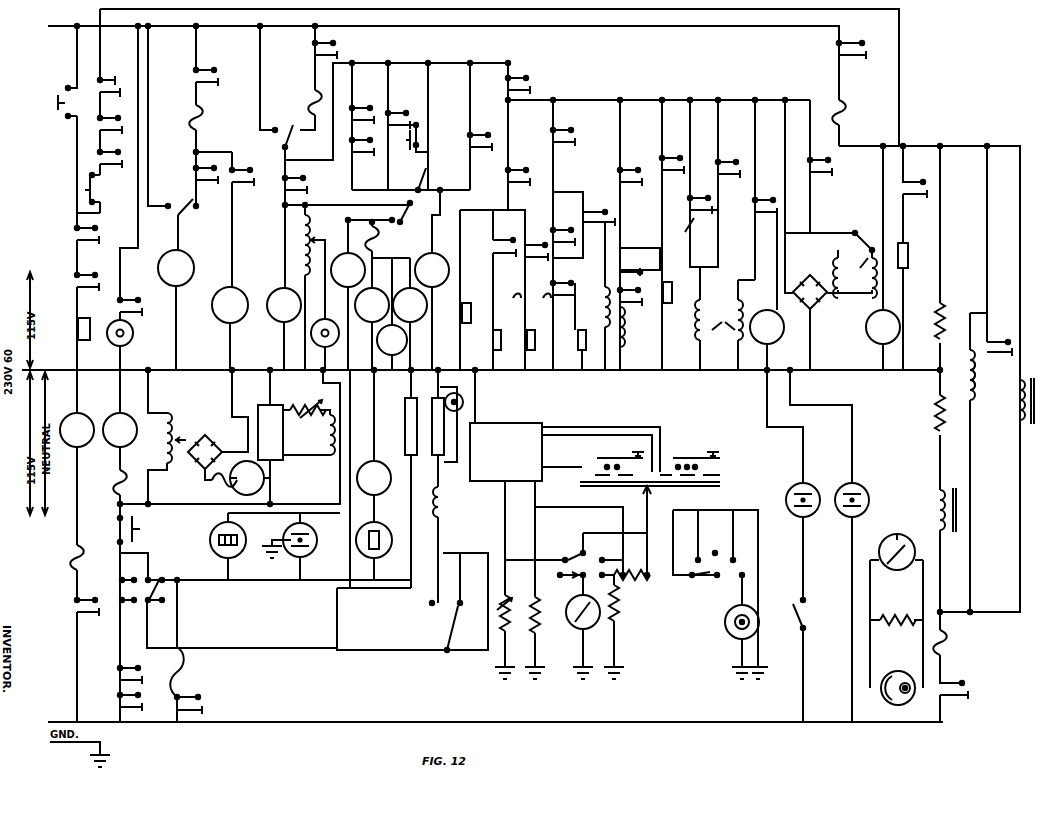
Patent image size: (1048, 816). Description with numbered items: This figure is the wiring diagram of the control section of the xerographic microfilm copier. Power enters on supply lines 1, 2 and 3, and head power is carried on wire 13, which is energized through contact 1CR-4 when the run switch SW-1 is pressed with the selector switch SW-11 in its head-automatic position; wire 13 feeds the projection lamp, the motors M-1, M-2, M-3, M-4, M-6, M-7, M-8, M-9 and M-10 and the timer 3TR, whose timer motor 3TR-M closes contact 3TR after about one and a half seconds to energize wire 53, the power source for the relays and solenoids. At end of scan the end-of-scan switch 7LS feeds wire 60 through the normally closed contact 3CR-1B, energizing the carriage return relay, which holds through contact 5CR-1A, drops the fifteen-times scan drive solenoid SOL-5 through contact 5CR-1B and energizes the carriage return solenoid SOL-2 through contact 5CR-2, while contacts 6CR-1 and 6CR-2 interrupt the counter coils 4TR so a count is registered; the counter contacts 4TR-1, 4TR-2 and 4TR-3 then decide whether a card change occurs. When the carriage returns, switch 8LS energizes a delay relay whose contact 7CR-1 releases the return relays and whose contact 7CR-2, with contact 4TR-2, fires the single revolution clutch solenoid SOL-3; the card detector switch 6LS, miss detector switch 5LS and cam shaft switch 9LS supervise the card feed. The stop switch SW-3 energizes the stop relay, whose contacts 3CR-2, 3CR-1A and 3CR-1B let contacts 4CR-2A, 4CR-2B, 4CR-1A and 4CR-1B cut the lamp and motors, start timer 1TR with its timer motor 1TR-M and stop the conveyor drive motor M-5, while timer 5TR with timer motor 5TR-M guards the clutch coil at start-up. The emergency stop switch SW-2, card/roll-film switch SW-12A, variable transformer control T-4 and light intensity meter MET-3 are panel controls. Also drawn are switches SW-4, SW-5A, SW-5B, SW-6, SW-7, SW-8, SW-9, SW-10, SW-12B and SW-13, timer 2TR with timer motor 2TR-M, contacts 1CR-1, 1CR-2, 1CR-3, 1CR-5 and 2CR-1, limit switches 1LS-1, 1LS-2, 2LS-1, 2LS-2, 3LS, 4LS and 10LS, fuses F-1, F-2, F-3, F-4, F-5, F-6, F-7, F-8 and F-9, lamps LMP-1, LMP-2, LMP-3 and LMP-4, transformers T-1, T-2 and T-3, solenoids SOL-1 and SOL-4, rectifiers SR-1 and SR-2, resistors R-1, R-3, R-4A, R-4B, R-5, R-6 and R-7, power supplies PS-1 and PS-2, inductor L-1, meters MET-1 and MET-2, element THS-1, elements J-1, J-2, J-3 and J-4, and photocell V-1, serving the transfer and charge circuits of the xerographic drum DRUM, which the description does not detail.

The line 1 (115V neutral bus) 1 is at (474, 371).
The line 2 (ground bus) 2 is at (488, 723).
The line 3 (115V bus) 3 is at (436, 31).
The wire 13 is at (396, 131).
The wire 53 is at (655, 104).
The wire 60 is at (535, 304).
The Run switch SW-1 is at (69, 118).
The Emergency Stop switch SW-2 is at (111, 193).
The Stop switch SW-3 is at (433, 125).
The switch SW-4 is at (265, 637).
The switch SW-5A is at (592, 559).
The switch SW-5B is at (716, 594).
The transfer switch POS./NEG. SW-6 is at (425, 602).
The switch SW-7 is at (180, 125).
The switch SW-8 is at (817, 660).
The switch SW-9 is at (114, 542).
The switch SW-10 is at (463, 402).
The Projection Only-Automatic switch SW-11 is at (279, 91).
The Card-Roll Film switch SW-12A is at (404, 220).
The card / roll film switch SW-12B is at (437, 175).
The 15X/20X switch SW-13 is at (846, 235).
The timer 1TR is at (112, 72).
The timer motor 1TR-M is at (230, 328).
The timer relay contact 2TR is at (914, 193).
The timer motor 2TR-M is at (883, 257).
The timer 3TR is at (537, 80).
The timer motor 3TR-M is at (362, 287).
The automatic reset-type counter 4TR is at (725, 318).
The counter contact 4TR-1 is at (734, 155).
The counter contact 4TR-2 is at (638, 310).
The counter contact 4TR-3 is at (599, 248).
The timer 5TR is at (691, 238).
The timer motor 5TR-M is at (767, 291).
The control relay contact 1CR-1 is at (991, 689).
The control relay contact 1CR-2 is at (94, 660).
The control relay contact 1CR-3 is at (210, 708).
The relay contact 1CR-4 is at (350, 49).
The control relay contact 1CR-5 is at (218, 64).
The control relay contact 2CR-1 is at (1001, 359).
The relay contact 3CR-1A is at (492, 270).
The relay contact 3CR-1B is at (539, 305).
The relay contact 3CR-2 is at (403, 125).
The relay contact 4CR-1A is at (247, 219).
The relay contact 4CR-1B is at (187, 178).
The relay contact 4CR-2A is at (484, 125).
The relay contact 4CR-2B is at (346, 191).
The relay contact 5CR-1A is at (576, 235).
The relay contact 5CR-1B is at (820, 196).
The relay contact 5CR-2 is at (608, 235).
The relay contact 6CR-1 is at (748, 190).
The relay contact 6CR-2 is at (675, 235).
The relay contact 7CR-1 is at (567, 225).
The relay contact 7CR-2 is at (640, 262).
The limit switch contact 1LS-1 is at (95, 244).
The limit switch contact 1LS-2 is at (110, 701).
The limit switch contact 2LS-1 is at (95, 295).
The limit switch contact 2LS-2 is at (110, 674).
The limit switch 3LS is at (112, 126).
The limit switch 4LS is at (112, 155).
The miss detector switch 5LS is at (362, 125).
The card detector switch 6LS is at (410, 164).
The end of scan switch 7LS is at (520, 155).
The start scan switch 8LS is at (688, 157).
The cam shaft switch 9LS is at (566, 291).
The limit switch 10LS is at (135, 172).
The motor M-1 is at (374, 445).
The motor M-2 is at (120, 420).
The motor M-3 is at (250, 478).
The motor M-4 is at (77, 457).
The conveyor drive motor M-5 is at (176, 292).
The motor M-6 is at (284, 287).
The motor M-7 is at (372, 329).
The motor M-8 is at (392, 314).
The motor M-9 is at (410, 314).
The motor M-10 is at (430, 280).
The fuse F-1 is at (108, 488).
The fuse F-2 is at (976, 666).
The fuse F-3 is at (86, 572).
The fuse F-4 is at (186, 637).
The fuse F-5 is at (304, 77).
The fuse F-6 is at (210, 155).
The fuse F-7 is at (850, 123).
The fuse F-8 is at (218, 485).
The fuse F-9 is at (387, 254).
The lamp LMP-1 is at (405, 406).
The lamp LMP-2 is at (452, 425).
The lamp LMP-3 is at (327, 344).
The lamp LMP-4 is at (135, 345).
The transformer T-1 is at (968, 378).
The transformer T-2 is at (973, 504).
The transformer T-3 is at (230, 437).
The variable transformer control T-4 is at (304, 287).
The solenoid SOL-1 is at (309, 435).
The carriage return solenoid SOL-2 is at (593, 328).
The single revolution clutch solenoid SOL-3 is at (638, 338).
The solenoid SOL-4 is at (852, 280).
The 15x scan drive solenoid SOL-5 is at (848, 274).
The selenium rectifier SR-1 is at (218, 424).
The selenium rectifier SR-2 is at (797, 322).
The resistor R-1 is at (306, 404).
The resistor R-3 is at (625, 568).
The resistor R-4A is at (954, 269).
The resistor R-4B is at (921, 429).
The resistor R-5 is at (622, 627).
The resistor R-6 is at (531, 580).
The resistor R-7 is at (565, 580).
The power supply PS-1 is at (506, 424).
The power supply PS-2 is at (258, 436).
The inductor L-1 is at (429, 485).
The meter MET-1 is at (570, 627).
The meter MET-2 is at (250, 546).
The light intensity meter MET-3 is at (896, 611).
The thermostat THS-1 is at (362, 551).
The jack J-1 is at (836, 545).
The jack J-2 is at (289, 546).
The jack J-3 is at (729, 642).
The jack J-4 is at (788, 484).
The photo-cell tube V-1 is at (888, 686).
The xerographic drum DRUM is at (631, 501).